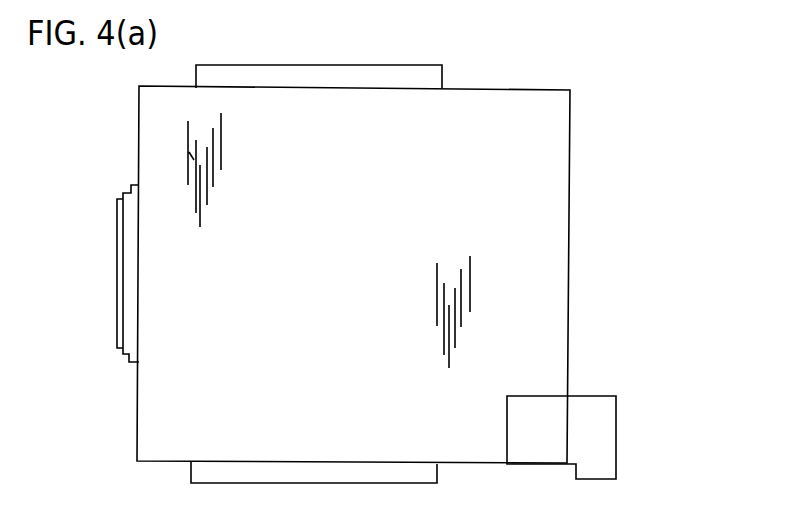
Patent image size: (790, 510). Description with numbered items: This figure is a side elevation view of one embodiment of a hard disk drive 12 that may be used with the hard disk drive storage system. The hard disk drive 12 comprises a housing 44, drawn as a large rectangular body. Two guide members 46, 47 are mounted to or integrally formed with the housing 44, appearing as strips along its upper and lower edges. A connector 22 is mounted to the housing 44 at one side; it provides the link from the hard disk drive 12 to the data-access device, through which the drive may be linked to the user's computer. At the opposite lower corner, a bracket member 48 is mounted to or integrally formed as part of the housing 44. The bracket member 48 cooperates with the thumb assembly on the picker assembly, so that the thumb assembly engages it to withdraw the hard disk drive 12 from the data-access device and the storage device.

The hard disk drive 12 is at (394, 275).
The connector 22 is at (113, 333).
The housing 44 is at (568, 254).
The guide member 46 is at (442, 70).
The guide member 47 is at (437, 478).
The bracket member 48 is at (616, 430).